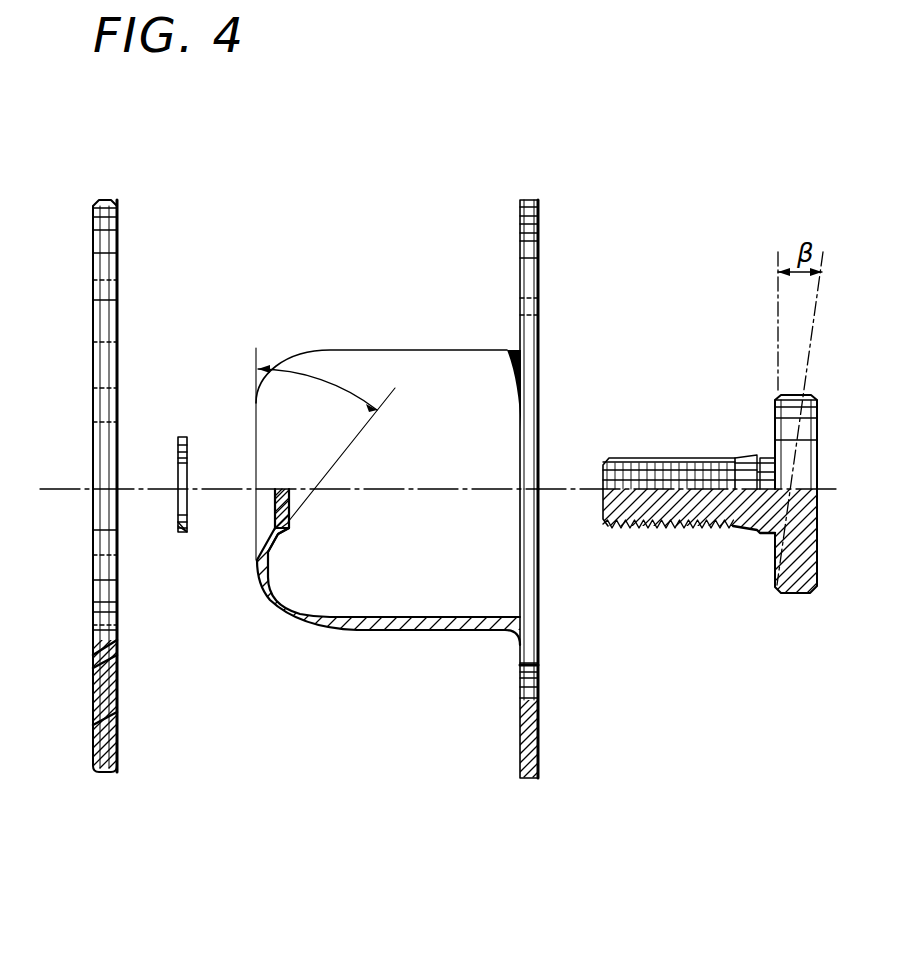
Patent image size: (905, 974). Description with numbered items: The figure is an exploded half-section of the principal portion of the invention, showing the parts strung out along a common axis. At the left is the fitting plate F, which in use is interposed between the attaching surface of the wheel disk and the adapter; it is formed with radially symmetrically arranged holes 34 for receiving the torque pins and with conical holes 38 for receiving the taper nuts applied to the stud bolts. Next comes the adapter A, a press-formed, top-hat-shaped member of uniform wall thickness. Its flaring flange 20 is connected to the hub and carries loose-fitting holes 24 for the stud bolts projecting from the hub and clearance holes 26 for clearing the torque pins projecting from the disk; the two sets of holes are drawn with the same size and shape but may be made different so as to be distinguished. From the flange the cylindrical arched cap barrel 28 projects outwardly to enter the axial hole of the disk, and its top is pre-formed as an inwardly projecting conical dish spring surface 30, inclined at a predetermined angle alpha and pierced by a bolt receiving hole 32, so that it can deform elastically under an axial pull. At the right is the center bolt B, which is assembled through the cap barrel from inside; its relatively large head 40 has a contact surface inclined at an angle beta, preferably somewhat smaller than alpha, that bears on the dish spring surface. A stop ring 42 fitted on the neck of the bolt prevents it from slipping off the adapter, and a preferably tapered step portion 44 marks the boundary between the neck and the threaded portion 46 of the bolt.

The flaring flange 20 is at (523, 389).
The loose-fitting hole 24 is at (535, 718).
The clearance hole 26 is at (527, 310).
The cylindrical arched cap barrel 28 is at (410, 630).
The dish spring surface 30 is at (275, 541).
The bolt receiving hole 32 is at (273, 514).
The hole 34 is at (104, 308).
The conical hole 38 is at (103, 722).
The head 40 is at (778, 580).
The stop ring 42 is at (181, 437).
The step portion 44 is at (745, 458).
The threaded portion 46 is at (643, 458).
The adapter A is at (390, 356).
The center bolt B is at (700, 528).
The fitting plate F is at (93, 352).